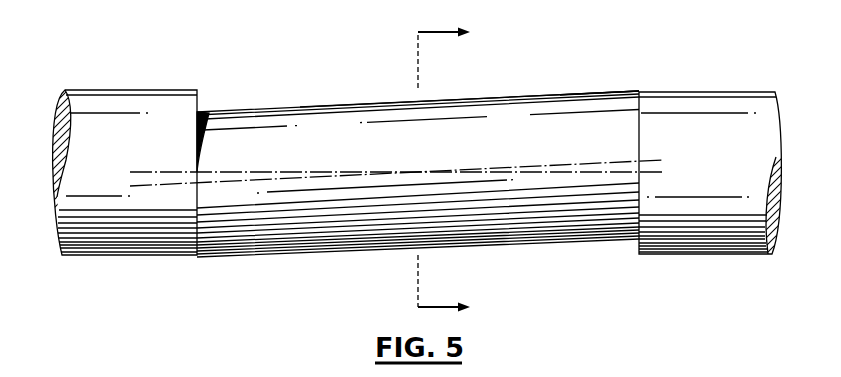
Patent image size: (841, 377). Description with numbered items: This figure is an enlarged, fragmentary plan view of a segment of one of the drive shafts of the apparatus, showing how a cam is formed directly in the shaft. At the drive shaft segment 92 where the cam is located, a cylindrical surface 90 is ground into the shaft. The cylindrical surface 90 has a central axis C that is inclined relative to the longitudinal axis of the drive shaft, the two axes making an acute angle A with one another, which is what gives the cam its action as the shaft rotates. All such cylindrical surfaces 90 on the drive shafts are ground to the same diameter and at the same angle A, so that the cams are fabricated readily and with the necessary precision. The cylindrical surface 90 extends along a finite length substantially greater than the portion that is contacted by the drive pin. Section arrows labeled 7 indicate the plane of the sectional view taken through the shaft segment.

The cylindrical surface 90 is at (507, 108).
The drive shaft segment 92 is at (595, 88).
The central axis C is at (157, 186).
The acute angle A is at (216, 176).
The section line for FIG. 7 is at (451, 170).